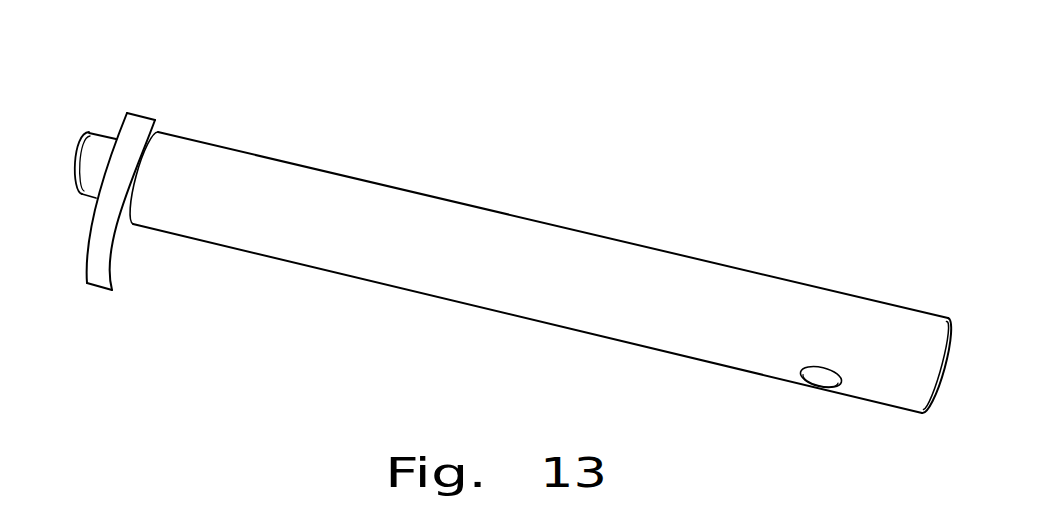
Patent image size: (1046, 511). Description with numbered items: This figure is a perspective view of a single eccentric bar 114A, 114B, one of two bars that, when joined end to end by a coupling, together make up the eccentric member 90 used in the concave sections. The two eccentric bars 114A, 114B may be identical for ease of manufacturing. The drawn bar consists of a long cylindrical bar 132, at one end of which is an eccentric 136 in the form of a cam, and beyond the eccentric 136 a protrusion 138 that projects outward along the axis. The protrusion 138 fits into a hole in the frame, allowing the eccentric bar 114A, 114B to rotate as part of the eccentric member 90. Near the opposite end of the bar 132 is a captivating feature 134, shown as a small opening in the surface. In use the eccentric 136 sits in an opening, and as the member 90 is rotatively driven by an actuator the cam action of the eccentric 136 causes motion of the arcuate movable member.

The eccentric member 90 is at (282, 104).
The eccentric bar 114A is at (553, 225).
The eccentric bar 114B is at (630, 210).
The bar 132 is at (357, 277).
The captivating feature 134 is at (812, 400).
The eccentric 136 is at (127, 271).
The protrusion 138 is at (97, 131).